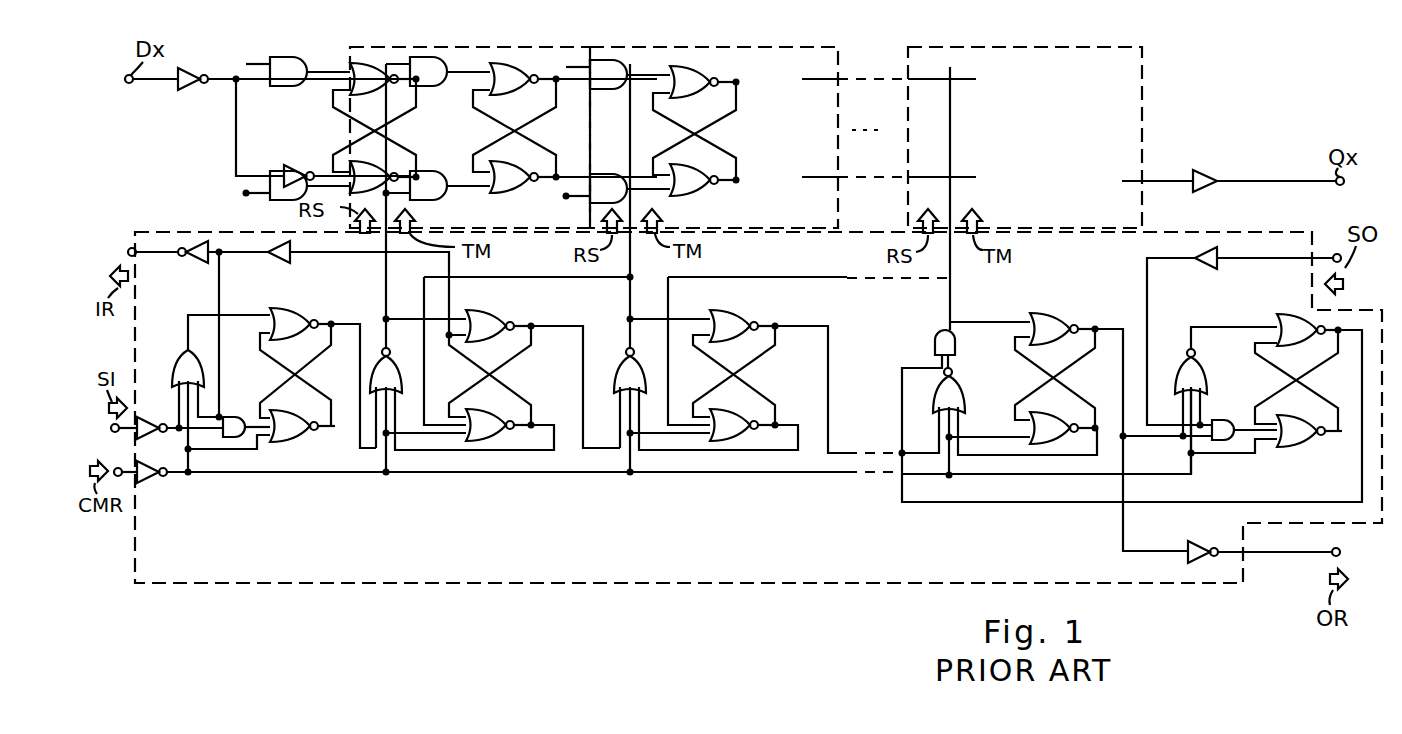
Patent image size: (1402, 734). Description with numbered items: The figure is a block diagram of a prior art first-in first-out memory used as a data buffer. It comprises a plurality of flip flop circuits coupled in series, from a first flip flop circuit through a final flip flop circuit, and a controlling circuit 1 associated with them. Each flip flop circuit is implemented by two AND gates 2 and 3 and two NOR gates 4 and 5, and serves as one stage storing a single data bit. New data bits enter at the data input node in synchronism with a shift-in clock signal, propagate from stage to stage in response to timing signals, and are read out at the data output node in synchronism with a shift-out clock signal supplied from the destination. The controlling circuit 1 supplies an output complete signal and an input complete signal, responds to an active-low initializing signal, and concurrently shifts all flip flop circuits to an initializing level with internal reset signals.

The controlling circuit 1 is at (758, 387).
The AND gate 2 is at (430, 57).
The AND gate 3 is at (433, 172).
The NOR gate 4 is at (518, 64).
The NOR gate 5 is at (510, 193).